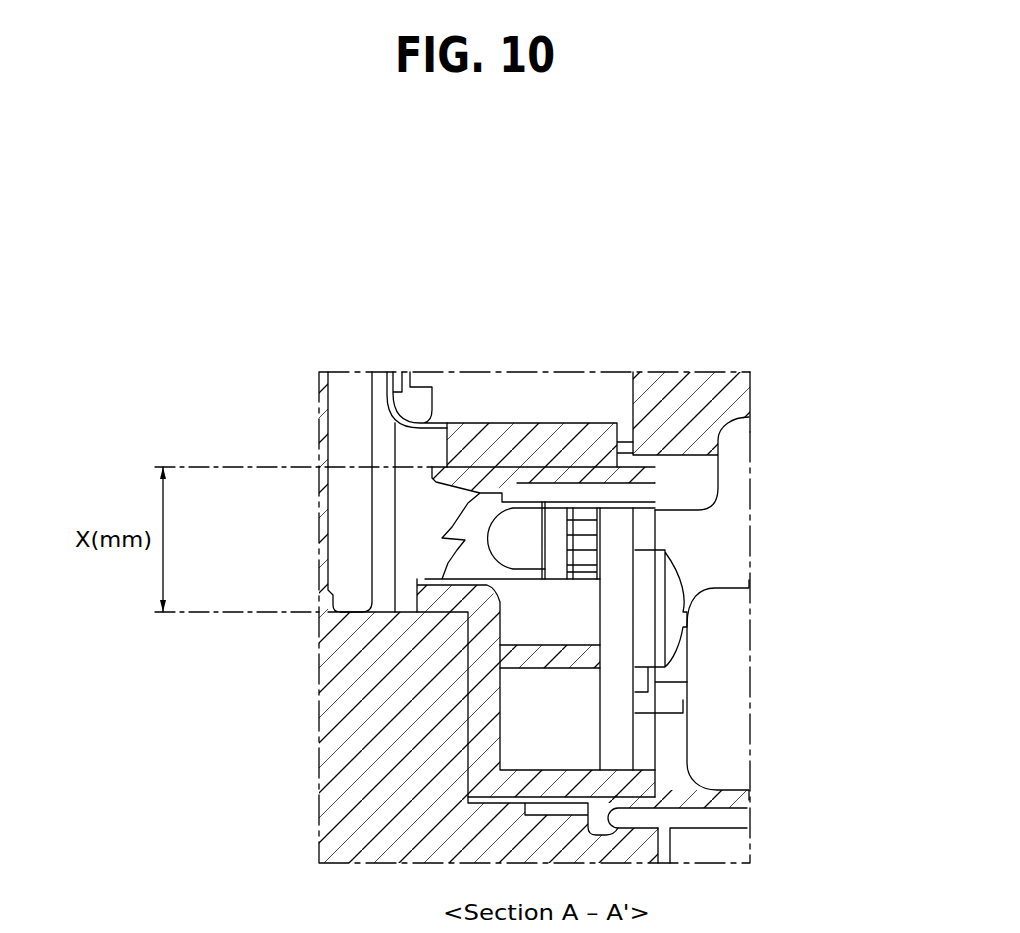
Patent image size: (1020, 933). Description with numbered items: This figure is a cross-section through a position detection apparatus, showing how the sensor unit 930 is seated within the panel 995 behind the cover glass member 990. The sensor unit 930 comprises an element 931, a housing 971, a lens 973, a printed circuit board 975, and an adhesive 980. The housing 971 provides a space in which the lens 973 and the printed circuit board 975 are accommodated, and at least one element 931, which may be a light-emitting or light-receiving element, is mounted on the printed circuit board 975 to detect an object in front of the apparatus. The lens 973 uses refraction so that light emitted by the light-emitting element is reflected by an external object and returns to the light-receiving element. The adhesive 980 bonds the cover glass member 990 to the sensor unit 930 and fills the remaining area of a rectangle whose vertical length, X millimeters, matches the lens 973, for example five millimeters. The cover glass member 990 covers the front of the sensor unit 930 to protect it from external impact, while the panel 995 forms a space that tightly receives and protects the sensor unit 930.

The sensor unit 930 is at (817, 222).
The element 931 is at (508, 530).
The housing 971 is at (637, 782).
The lens 973 is at (417, 485).
The printed circuit board 975 is at (617, 540).
The adhesive 980 is at (372, 518).
The cover glass member 990 is at (347, 572).
The panel 995 is at (342, 757).